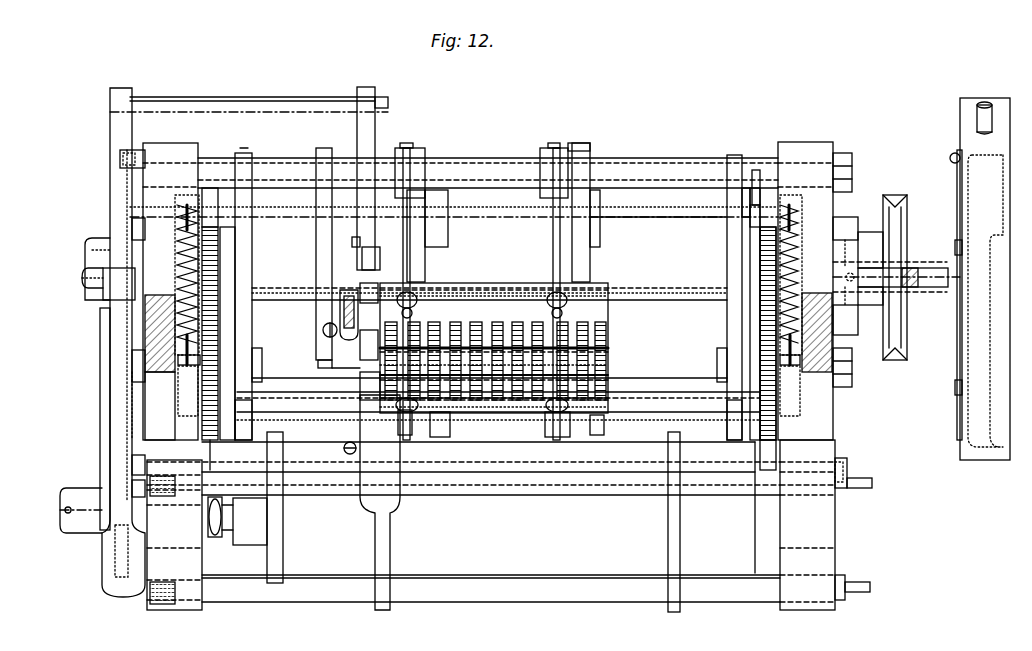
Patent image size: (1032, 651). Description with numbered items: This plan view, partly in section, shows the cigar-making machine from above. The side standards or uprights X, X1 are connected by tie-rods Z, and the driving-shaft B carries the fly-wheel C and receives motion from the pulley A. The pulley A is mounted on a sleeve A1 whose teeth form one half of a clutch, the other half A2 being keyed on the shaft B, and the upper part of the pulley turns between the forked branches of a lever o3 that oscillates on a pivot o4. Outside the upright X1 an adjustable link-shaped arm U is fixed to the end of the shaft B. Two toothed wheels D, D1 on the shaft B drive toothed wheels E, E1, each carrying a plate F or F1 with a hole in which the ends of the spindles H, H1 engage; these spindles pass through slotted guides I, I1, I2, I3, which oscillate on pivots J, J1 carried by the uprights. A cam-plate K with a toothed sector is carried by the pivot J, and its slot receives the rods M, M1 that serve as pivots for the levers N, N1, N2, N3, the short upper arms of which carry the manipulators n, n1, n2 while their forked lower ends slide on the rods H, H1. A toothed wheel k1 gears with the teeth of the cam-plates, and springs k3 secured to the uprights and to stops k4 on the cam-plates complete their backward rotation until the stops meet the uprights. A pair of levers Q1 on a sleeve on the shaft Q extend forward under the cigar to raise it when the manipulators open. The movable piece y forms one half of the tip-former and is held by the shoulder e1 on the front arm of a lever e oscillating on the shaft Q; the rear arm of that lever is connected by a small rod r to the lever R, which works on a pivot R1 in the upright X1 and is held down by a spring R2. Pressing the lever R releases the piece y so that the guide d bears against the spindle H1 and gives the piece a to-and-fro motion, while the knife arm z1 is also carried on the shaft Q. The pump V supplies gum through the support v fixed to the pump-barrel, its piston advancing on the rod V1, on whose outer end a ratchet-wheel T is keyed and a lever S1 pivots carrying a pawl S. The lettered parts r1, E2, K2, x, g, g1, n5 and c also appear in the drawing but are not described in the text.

The lever R is at (110, 131).
The pivot R1 is at (96, 246).
The spring R2 is at (120, 158).
The ratchet-wheel T is at (115, 552).
The pawl S is at (120, 410).
The lever S1 is at (100, 398).
The small rod r is at (293, 107).
The bar r1 is at (122, 406).
The pump V is at (463, 503).
The rod V1 is at (60, 512).
The support v is at (363, 450).
The driving-shaft B is at (82, 278).
The adjustable link-shaped arm U is at (103, 296).
The shaft Q is at (160, 176).
The pair of levers Q1 is at (412, 180).
The toothed wheels E is at (786, 400).
The toothed wheels E1 is at (185, 272).
The spring seat E2 is at (186, 400).
The toothed wheel k1 is at (790, 366).
The springs k3 is at (806, 275).
The stops k4 is at (186, 366).
The cam-plate K is at (227, 333).
The rack K2 is at (760, 333).
The toothed wheel D is at (748, 236).
The toothed wheel D1 is at (219, 238).
The plates F is at (205, 197).
The plates F1 is at (768, 192).
The guide I is at (727, 232).
The guide I1 is at (236, 420).
The guide I2 is at (260, 230).
The guide I3 is at (744, 420).
The pivot J is at (258, 364).
The pivot J1 is at (717, 360).
The side standard X is at (825, 525).
The side standard X1 is at (174, 535).
The tie-rods Z is at (852, 475).
The lever e is at (370, 130).
The adjustable piece e1 is at (380, 255).
The guide d is at (350, 270).
The lever arm z1 is at (324, 344).
The lever x is at (339, 370).
The movable piece y is at (370, 341).
The bar g is at (749, 202).
The rail g1 is at (280, 168).
The spindle H is at (637, 414).
The spindle H1 is at (637, 215).
The spindle M is at (645, 388).
The spindle M1 is at (638, 292).
The lever N is at (450, 428).
The lever N1 is at (599, 427).
The lever N2 is at (448, 230).
The lever N3 is at (407, 226).
The manipulator n is at (494, 406).
The manipulator n1 is at (494, 361).
The manipulator n2 is at (494, 368).
The reed frame n5 is at (494, 348).
The pulley A is at (901, 330).
The sleeve A1 is at (858, 318).
The clutch half A2 is at (858, 240).
The lever o3 is at (922, 276).
The pivot o4 is at (916, 264).
The fly-wheel C is at (980, 279).
The cylinder c is at (990, 118).